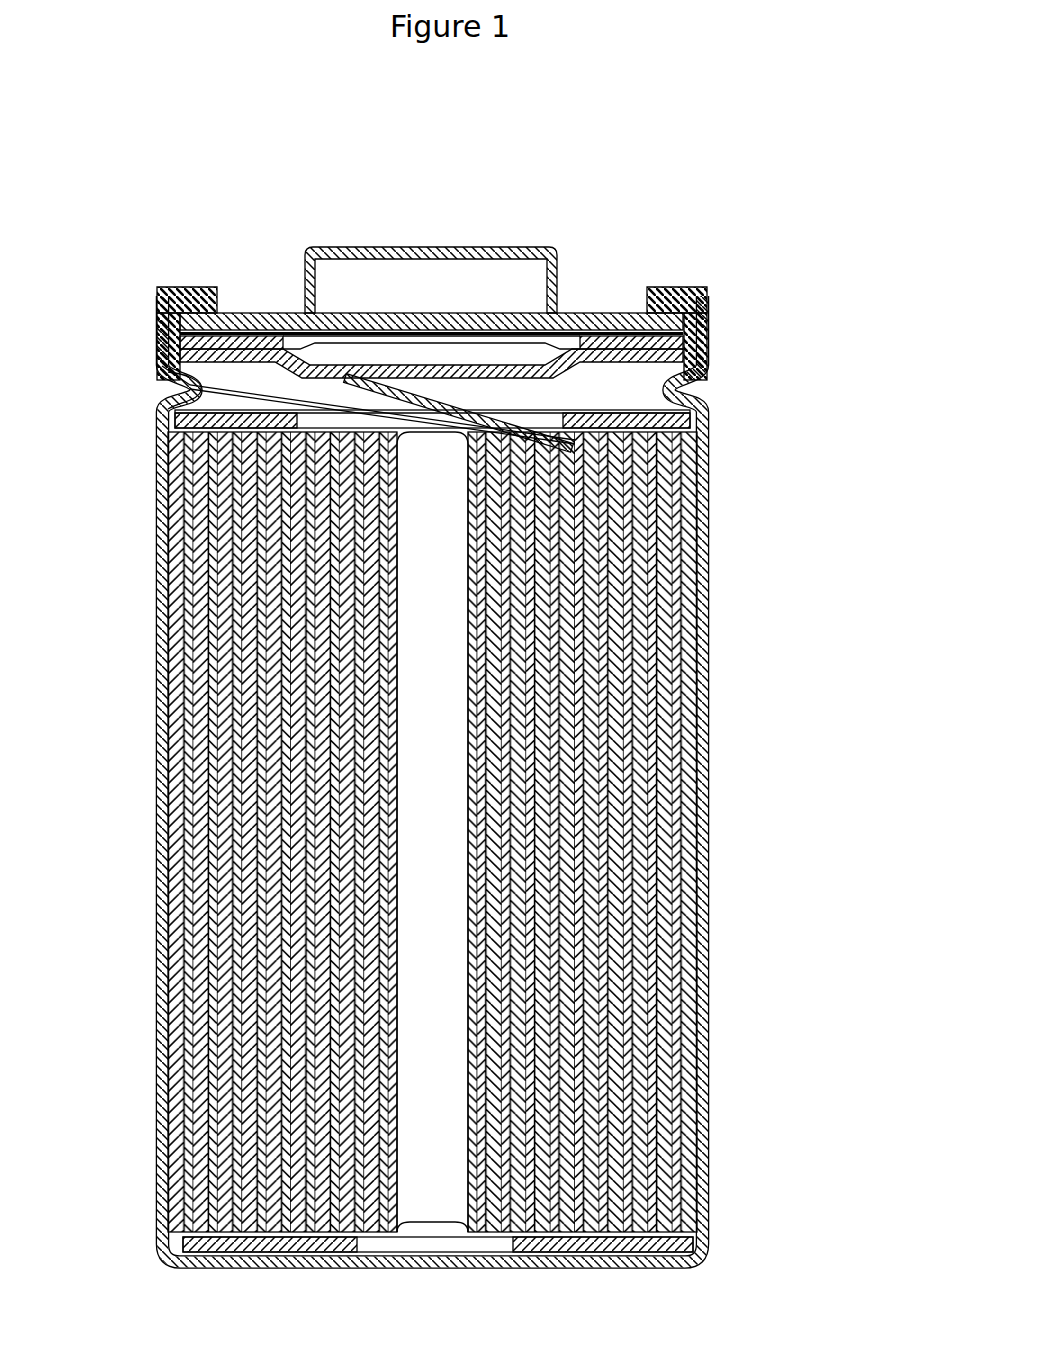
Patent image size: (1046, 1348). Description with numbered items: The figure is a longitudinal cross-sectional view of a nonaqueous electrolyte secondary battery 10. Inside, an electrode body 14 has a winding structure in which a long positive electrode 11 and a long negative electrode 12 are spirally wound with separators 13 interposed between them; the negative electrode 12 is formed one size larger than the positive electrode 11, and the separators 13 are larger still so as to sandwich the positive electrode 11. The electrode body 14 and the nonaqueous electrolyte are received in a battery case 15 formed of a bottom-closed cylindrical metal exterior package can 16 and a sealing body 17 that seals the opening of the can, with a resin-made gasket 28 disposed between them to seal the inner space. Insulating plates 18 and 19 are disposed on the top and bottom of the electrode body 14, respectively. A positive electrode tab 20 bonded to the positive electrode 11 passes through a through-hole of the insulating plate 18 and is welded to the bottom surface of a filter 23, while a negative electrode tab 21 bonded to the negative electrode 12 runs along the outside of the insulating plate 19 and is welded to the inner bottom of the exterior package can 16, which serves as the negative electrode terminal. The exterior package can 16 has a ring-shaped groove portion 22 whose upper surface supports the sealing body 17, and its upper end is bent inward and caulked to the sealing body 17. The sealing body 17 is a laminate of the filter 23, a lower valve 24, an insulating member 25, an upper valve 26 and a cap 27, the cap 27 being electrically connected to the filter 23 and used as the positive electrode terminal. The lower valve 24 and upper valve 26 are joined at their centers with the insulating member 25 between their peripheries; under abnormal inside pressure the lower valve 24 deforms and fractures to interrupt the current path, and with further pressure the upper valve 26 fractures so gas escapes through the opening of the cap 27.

The nonaqueous electrolyte secondary battery 10 is at (724, 103).
The positive electrode 11 is at (692, 905).
The negative electrode 12 is at (692, 940).
The separator 13 is at (692, 975).
The electrode body 14 is at (812, 893).
The battery case 15 is at (688, 188).
The exterior package can 16 is at (672, 287).
The sealing body 17 is at (589, 312).
The insulating plate 18 is at (712, 427).
The insulating plate 19 is at (712, 1250).
The positive electrode tab 20 is at (162, 366).
The negative electrode tab 21 is at (160, 1233).
The groove portion 22 is at (168, 393).
The filter 23 is at (432, 376).
The lower valve 24 is at (322, 337).
The insulating member 25 is at (252, 348).
The upper valve 26 is at (348, 334).
The cap 27 is at (511, 247).
The gasket 28 is at (710, 313).